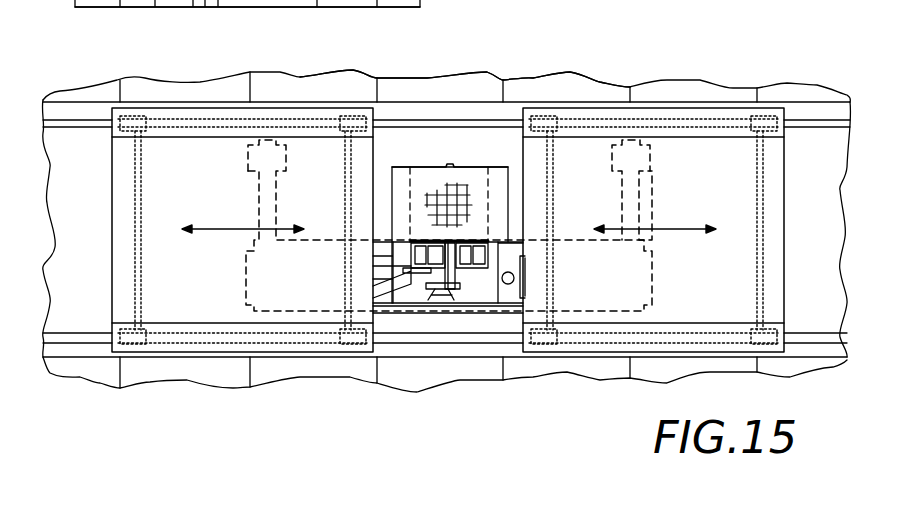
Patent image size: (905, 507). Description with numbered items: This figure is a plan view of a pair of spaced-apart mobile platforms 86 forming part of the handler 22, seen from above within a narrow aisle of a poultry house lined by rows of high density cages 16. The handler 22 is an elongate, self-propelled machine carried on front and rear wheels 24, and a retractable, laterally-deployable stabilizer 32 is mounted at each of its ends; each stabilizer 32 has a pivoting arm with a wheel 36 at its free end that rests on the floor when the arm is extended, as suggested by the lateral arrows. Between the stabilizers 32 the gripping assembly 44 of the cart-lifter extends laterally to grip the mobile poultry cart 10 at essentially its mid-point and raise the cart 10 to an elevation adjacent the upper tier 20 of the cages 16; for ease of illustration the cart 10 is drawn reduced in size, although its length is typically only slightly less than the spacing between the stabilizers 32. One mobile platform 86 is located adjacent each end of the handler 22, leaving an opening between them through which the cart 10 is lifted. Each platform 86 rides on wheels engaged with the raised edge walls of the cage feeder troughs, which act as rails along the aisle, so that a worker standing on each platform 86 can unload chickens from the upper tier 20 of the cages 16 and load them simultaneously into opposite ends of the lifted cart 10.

The mobile poultry cart 10 is at (400, 183).
The high density cages 16 is at (570, 80).
The upper tier 20 is at (293, 373).
The handler 22 is at (463, 308).
The front and rear wheels 24 is at (203, 8).
The stabilizer 32 is at (254, 201).
The wheel 36 is at (300, 8).
The gripping assembly 44 is at (467, 165).
The mobile platform 86 is at (690, 155).